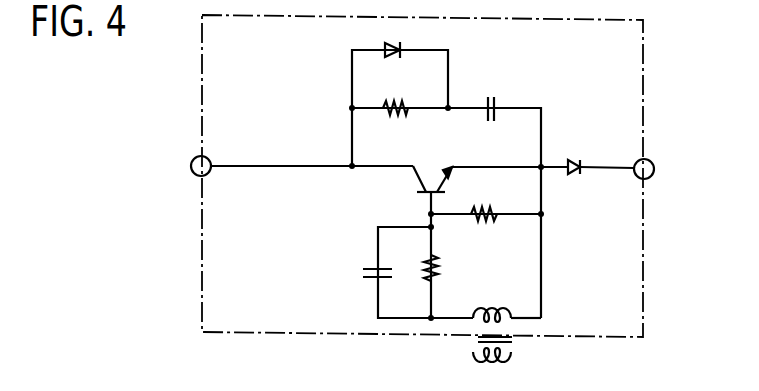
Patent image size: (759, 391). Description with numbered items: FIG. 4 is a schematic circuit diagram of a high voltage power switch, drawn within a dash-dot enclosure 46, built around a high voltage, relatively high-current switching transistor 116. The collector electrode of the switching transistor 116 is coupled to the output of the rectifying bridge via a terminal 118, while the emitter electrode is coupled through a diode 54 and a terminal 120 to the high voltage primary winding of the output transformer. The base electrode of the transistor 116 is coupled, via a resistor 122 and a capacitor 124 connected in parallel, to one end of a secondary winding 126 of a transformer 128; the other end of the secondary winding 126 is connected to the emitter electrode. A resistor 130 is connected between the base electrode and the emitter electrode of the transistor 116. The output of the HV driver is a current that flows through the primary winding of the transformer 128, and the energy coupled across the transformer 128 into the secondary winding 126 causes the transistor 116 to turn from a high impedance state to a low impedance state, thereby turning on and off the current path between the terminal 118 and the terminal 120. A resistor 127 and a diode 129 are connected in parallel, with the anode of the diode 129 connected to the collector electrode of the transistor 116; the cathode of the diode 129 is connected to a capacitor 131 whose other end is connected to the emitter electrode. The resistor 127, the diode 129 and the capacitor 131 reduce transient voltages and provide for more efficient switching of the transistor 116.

The controller circuit enclosure 46 is at (646, 42).
The diode 54 is at (570, 163).
The switching transistor 116 is at (416, 172).
The terminal 118 is at (191, 166).
The terminal 120 is at (655, 167).
The resistor 122 is at (436, 269).
The capacitor 124 is at (368, 268).
The secondary winding 126 is at (496, 308).
The resistor 127 is at (394, 101).
The transformer 128 is at (522, 344).
The diode 129 is at (392, 44).
The resistor 130 is at (487, 221).
The capacitor 131 is at (496, 101).